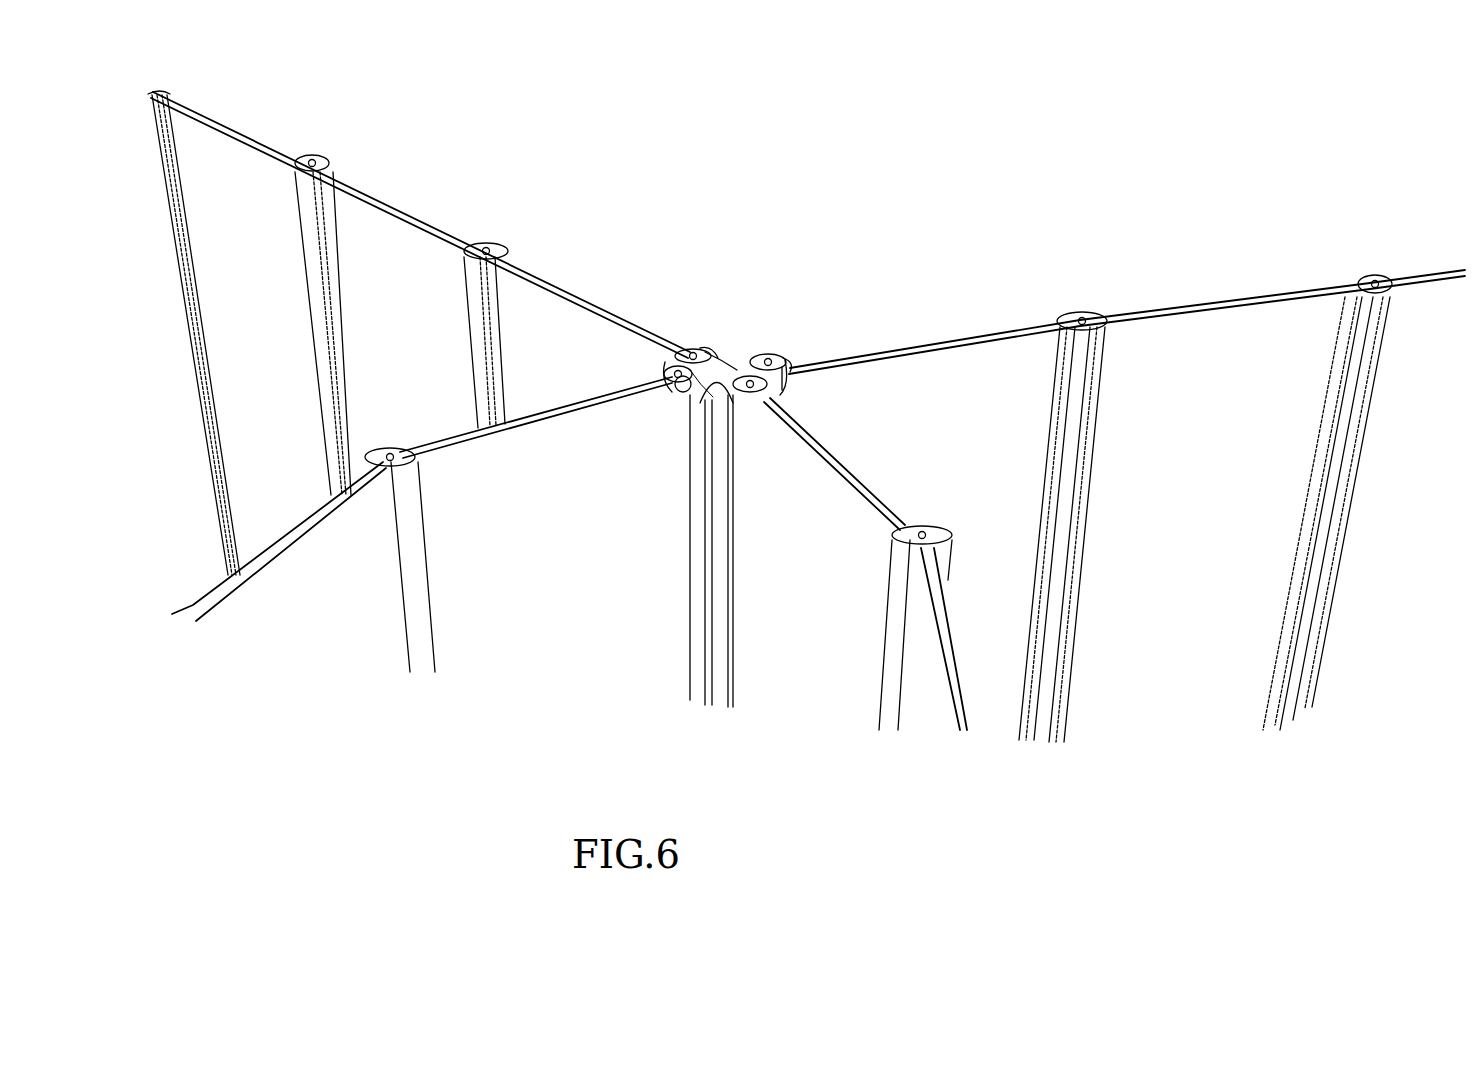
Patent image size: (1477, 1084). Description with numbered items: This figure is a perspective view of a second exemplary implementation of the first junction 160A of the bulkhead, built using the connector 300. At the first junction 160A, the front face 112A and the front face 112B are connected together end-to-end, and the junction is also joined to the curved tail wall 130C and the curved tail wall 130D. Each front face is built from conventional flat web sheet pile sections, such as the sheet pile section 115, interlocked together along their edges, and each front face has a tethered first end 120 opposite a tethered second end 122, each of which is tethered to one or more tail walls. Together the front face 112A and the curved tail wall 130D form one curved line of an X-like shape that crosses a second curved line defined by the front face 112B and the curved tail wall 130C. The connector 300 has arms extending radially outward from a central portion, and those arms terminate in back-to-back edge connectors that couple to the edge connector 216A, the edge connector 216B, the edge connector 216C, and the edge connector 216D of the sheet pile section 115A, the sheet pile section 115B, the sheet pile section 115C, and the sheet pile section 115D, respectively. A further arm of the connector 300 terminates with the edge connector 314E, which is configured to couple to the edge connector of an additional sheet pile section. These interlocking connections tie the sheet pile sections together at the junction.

The front face 112A is at (228, 112).
The front face 112B is at (1310, 290).
The sheet pile section 115 is at (265, 228).
The sheet pile section 115A is at (598, 362).
The sheet pile section 115B is at (966, 425).
The sheet pile section 115C is at (530, 496).
The sheet pile section 115D is at (866, 540).
The first end 120 is at (797, 360).
The second end 122 is at (667, 347).
The curved tail wall 130C is at (215, 593).
The curved tail wall 130D is at (968, 705).
The first junction 160A is at (1003, 110).
The edge connector 216A is at (702, 347).
The edge connector 216B is at (765, 360).
The edge connector 216C is at (680, 405).
The edge connector 216D is at (743, 405).
The connector 300 is at (725, 367).
The edge connector 314E is at (693, 575).